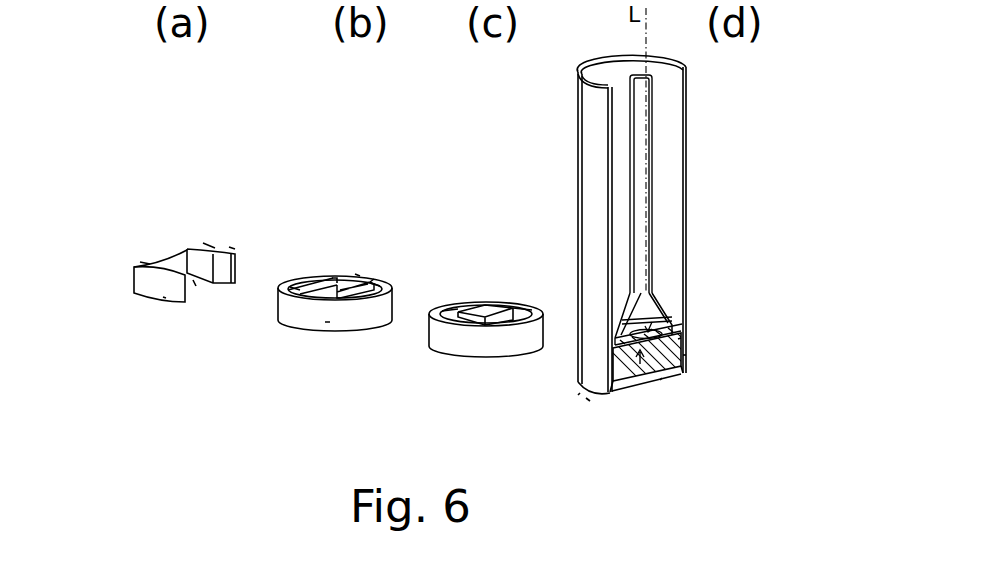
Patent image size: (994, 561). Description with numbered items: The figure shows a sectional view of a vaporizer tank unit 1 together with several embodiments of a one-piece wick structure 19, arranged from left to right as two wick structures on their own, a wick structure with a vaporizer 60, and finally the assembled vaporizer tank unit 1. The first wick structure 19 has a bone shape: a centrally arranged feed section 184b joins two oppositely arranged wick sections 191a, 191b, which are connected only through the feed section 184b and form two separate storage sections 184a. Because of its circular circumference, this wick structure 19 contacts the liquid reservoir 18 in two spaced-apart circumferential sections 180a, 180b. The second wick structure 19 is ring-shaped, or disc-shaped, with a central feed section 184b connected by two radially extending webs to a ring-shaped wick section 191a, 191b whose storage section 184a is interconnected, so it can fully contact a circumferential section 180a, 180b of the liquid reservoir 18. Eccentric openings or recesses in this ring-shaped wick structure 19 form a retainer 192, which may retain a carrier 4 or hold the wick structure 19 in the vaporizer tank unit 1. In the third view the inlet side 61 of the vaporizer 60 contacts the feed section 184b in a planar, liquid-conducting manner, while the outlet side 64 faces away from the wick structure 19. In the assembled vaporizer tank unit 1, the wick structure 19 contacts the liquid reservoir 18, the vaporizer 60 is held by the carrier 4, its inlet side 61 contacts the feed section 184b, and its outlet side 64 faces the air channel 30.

The vaporizer tank unit 1 is at (593, 407).
The carrier 4 is at (578, 370).
The liquid reservoir 18 is at (590, 178).
The wick structure 19 is at (180, 258).
The air channel 30 is at (653, 187).
The vaporizer 60 is at (457, 303).
The inlet side 61 is at (638, 388).
The outlet side 64 is at (481, 297).
The circumferential section 180a is at (686, 358).
The circumferential section 180b is at (578, 396).
The storage section 184a is at (203, 243).
The feed section 184b is at (193, 281).
The wick section 191a is at (163, 298).
The wick section 191b is at (232, 247).
The retainer 192 is at (302, 294).